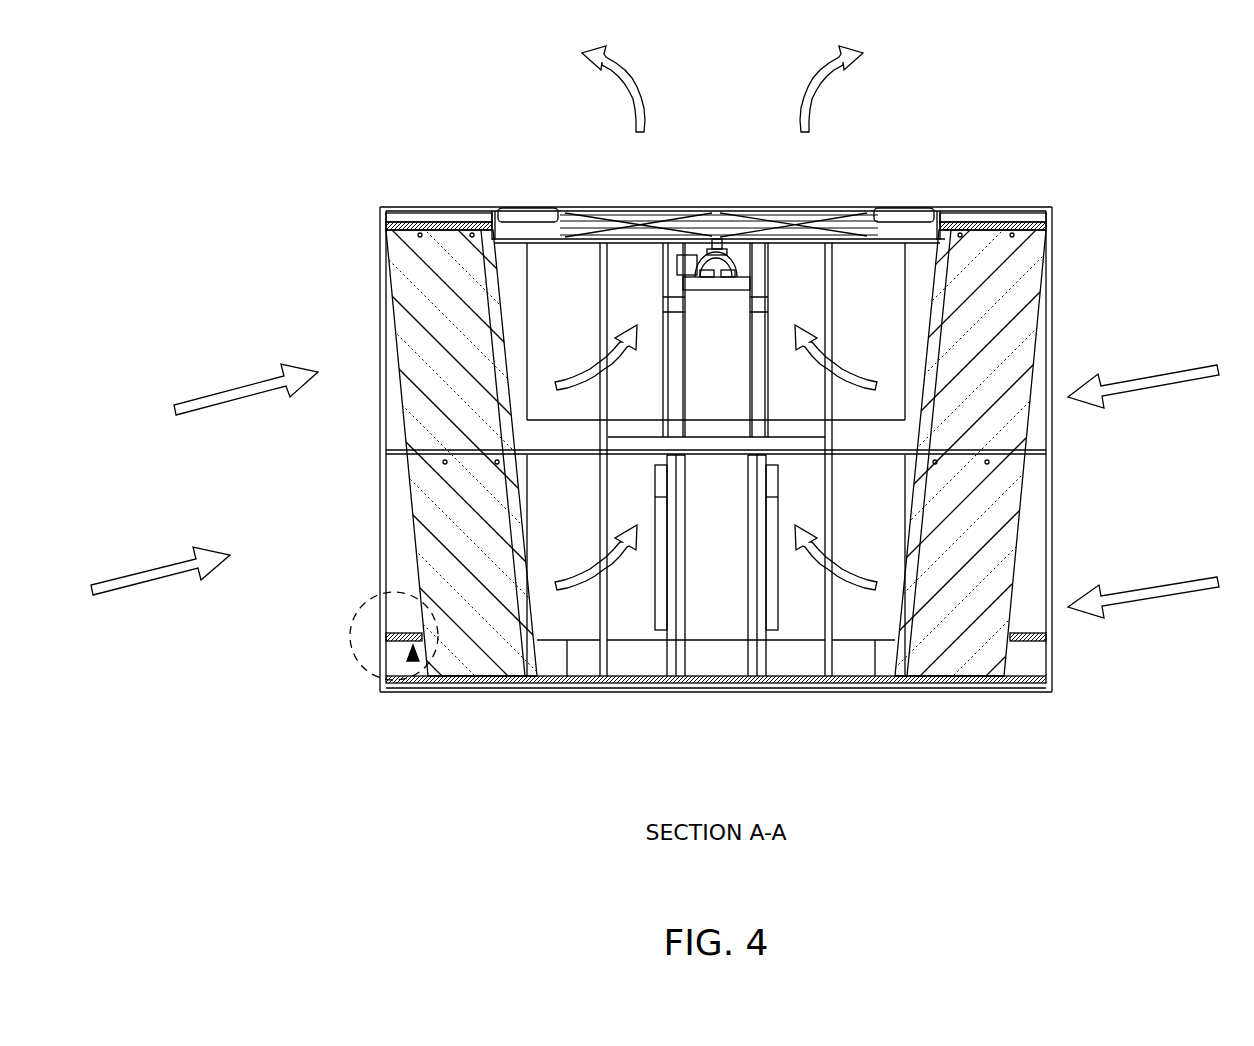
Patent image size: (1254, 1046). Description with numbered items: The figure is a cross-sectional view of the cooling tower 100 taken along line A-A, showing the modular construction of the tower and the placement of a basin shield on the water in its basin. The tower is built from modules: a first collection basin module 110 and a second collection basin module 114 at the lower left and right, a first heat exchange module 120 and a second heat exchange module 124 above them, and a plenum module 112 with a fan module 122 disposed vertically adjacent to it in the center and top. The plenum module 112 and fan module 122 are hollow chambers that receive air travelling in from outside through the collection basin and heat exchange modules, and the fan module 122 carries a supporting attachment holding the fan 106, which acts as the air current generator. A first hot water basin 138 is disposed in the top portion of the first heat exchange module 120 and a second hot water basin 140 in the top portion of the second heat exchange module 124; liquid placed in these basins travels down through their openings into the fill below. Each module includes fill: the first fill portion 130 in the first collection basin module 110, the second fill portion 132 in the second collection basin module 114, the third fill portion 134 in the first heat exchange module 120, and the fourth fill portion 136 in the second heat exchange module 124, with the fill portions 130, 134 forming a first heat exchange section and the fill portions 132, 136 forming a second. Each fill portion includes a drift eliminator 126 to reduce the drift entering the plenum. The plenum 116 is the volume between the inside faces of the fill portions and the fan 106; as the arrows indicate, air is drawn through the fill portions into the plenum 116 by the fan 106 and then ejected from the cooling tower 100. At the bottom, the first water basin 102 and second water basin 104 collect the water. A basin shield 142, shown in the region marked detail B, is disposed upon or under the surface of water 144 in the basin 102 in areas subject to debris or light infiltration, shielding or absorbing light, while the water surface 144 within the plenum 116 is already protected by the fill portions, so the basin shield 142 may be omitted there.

The cooling tower 100 is at (992, 102).
The first water basin 102 is at (383, 655).
The second water basin 104 is at (1050, 665).
The fan 106 is at (787, 207).
The first collection basin module 110 is at (382, 626).
The plenum module 112 is at (643, 690).
The second collection basin module 114 is at (1046, 567).
The plenum 116 is at (710, 575).
The first heat exchange module 120 is at (386, 284).
The fan module 122 is at (708, 205).
The second heat exchange module 124 is at (1046, 331).
The drift eliminator 126 is at (527, 532).
The first fill portion 130 is at (440, 512).
The second fill portion 132 is at (1005, 522).
The third fill portion 134 is at (430, 352).
The fourth fill portion 136 is at (1005, 297).
The first hot water basin 138 is at (445, 212).
The second hot water basin 140 is at (987, 212).
The basin shield 142 is at (383, 633).
The surface of water 144 is at (413, 660).
The detail B is at (383, 675).